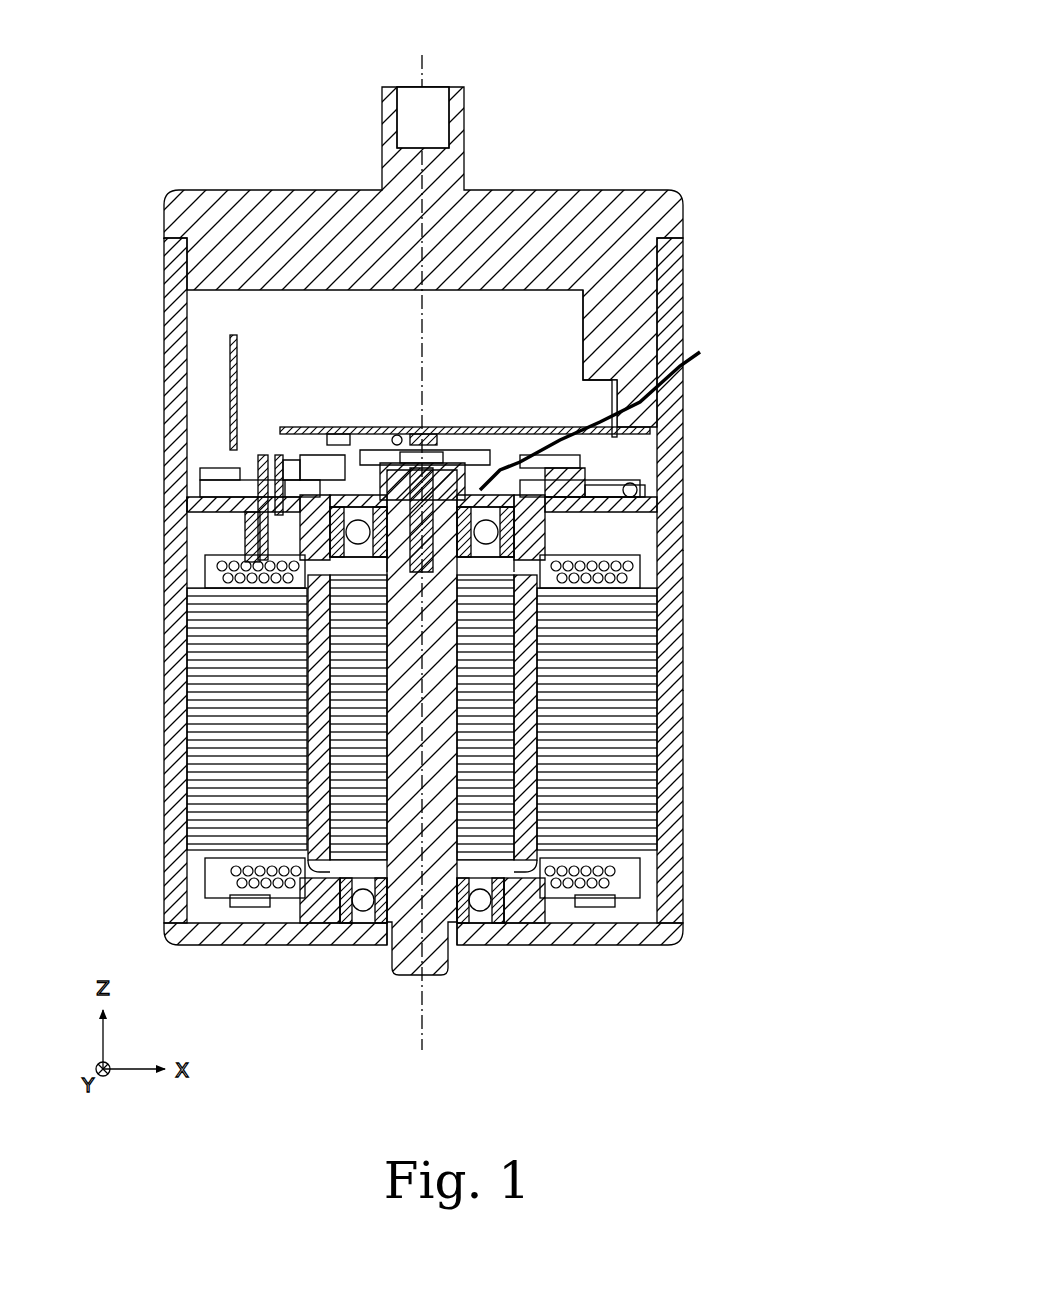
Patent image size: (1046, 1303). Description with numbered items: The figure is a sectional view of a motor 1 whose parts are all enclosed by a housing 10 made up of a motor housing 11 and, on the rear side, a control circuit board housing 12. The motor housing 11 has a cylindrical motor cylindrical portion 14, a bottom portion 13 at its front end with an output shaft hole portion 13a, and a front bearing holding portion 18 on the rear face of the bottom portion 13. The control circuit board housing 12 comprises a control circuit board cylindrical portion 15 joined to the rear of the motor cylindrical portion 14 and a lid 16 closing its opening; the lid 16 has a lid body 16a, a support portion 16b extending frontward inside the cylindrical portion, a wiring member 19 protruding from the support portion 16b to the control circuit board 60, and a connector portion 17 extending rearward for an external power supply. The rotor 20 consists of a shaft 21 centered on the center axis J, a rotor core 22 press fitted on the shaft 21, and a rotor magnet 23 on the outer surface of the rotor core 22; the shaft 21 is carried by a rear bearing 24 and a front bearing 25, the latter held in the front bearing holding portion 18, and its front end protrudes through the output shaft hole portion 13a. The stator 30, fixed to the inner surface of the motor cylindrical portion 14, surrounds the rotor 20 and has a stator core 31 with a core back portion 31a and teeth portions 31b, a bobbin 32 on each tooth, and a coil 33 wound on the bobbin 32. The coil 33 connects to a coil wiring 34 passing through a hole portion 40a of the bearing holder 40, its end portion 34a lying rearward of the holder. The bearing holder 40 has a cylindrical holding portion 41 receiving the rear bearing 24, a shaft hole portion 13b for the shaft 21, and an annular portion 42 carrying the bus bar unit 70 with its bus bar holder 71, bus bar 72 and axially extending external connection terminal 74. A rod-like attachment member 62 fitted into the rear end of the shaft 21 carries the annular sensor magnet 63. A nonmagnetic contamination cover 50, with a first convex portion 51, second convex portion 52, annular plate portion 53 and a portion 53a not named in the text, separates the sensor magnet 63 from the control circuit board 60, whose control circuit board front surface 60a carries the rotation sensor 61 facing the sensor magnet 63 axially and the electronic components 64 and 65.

The motor 1 is at (713, 90).
The housing 10 is at (780, 390).
The motor housing 11 is at (687, 690).
The control circuit board housing 12 is at (687, 412).
The bottom portion 13 is at (250, 935).
The output shaft hole portion 13a is at (447, 960).
The shaft hole portion 13b is at (618, 414).
The motor cylindrical portion 14 is at (172, 665).
The control circuit board cylindrical portion 15 is at (187, 500).
The lid 16 is at (458, 262).
The lid body 16a is at (287, 215).
The support portion 16b is at (636, 325).
The connector portion 17 is at (470, 140).
The front bearing holding portion 18 is at (320, 925).
The wiring member 19 is at (612, 405).
The rotor 20 is at (366, 789).
The shaft 21 is at (390, 970).
The rotor core 22 is at (520, 820).
The rotor magnet 23 is at (350, 620).
The rear bearing 24 is at (318, 600).
The front bearing 25 is at (478, 905).
The stator 30 is at (453, 740).
The stator core 31 is at (493, 756).
The core back portion 31a is at (640, 835).
The teeth portions 31b is at (590, 822).
The bobbin 32 is at (230, 875).
The coil 33 is at (250, 905).
The coil wiring 34 is at (270, 585).
The end portion 34a is at (240, 495).
The bearing holder 40 is at (655, 540).
The hole portion 40a is at (655, 560).
The holding portion 41 is at (655, 600).
The annular portion 42 is at (258, 520).
The contamination cover 50 is at (370, 499).
The first convex portion 51 is at (360, 455).
The second convex portion 52 is at (265, 455).
The annular plate portion 53 is at (308, 470).
The connecting end 53a is at (285, 470).
The control circuit board 60 is at (465, 389).
The control circuit board front surface 60a is at (395, 435).
The rotation sensor 61 is at (425, 435).
The attachment member 62 is at (445, 465).
The sensor magnet 63 is at (455, 480).
The electronic component 64 is at (500, 460).
The electronic component 65 is at (337, 437).
The bus bar unit 70 is at (645, 490).
The bus bar holder 71 is at (655, 510).
The bus bar 72 is at (655, 480).
The external connection terminal 74 is at (245, 340).
The center axis J is at (440, 1030).